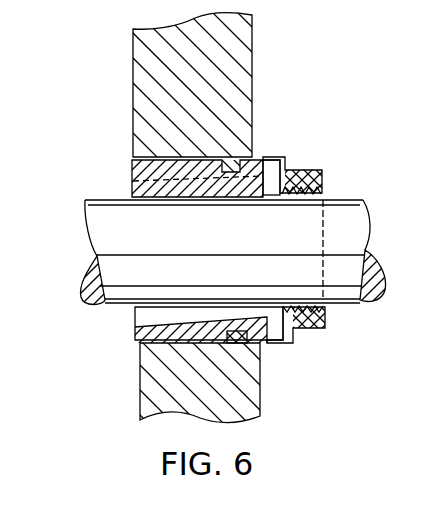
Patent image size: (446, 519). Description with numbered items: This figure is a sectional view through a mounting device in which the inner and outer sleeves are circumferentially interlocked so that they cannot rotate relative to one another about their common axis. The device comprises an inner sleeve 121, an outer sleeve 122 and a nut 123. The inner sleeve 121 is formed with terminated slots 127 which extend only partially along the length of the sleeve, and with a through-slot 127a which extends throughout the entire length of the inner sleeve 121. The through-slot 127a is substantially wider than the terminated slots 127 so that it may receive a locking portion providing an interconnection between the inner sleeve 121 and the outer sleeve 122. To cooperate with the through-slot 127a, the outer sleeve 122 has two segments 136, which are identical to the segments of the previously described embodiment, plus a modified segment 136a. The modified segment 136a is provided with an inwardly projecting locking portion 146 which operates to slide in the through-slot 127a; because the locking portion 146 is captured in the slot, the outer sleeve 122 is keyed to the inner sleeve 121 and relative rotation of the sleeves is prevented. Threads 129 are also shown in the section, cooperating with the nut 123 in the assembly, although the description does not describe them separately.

The modified segment 136a is at (162, 156).
The outer sleeve 122 is at (131, 166).
The locking portion 146 is at (131, 181).
The nut 123 is at (276, 158).
The threads 129 is at (322, 195).
The through-slot 127a is at (268, 201).
The inner sleeve 121 is at (133, 313).
The terminated slots 127 is at (293, 334).
The segments 136 is at (157, 345).